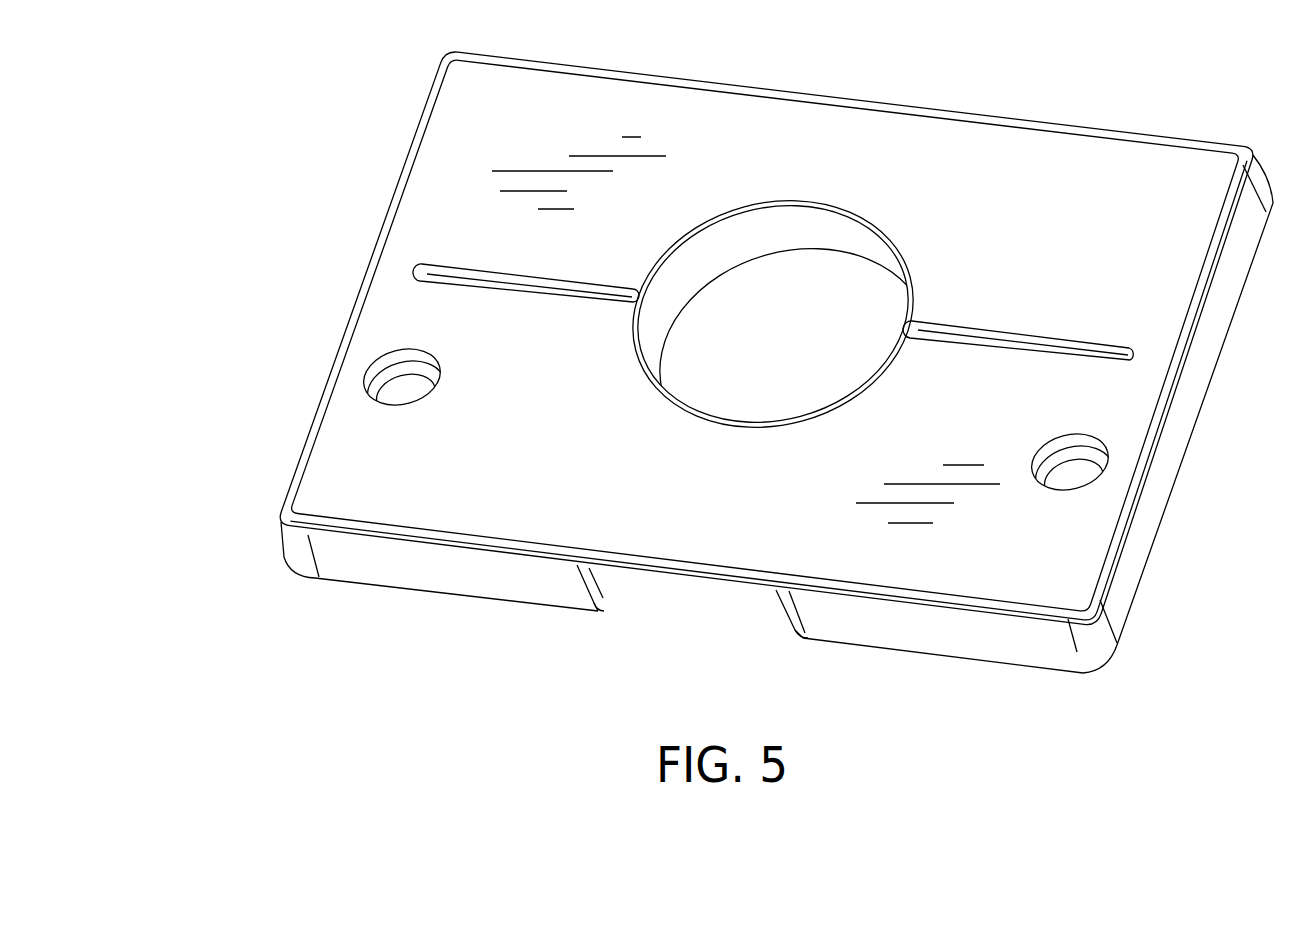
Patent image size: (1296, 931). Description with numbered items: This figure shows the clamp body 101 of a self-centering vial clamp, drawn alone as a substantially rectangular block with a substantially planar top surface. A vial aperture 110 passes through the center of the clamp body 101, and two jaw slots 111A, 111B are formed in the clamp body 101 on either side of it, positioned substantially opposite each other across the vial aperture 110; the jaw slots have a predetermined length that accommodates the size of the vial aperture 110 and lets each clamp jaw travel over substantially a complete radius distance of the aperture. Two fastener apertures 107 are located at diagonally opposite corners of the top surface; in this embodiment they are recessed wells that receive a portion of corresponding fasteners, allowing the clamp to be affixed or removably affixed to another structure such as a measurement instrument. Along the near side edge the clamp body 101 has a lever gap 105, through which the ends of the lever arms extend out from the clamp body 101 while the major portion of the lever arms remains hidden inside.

The clamp body 101 is at (258, 591).
The lever gap 105 is at (682, 600).
The fastener apertures 107 is at (384, 396).
The vial aperture 110 is at (822, 262).
The jaw slot 111A is at (419, 270).
The jaw slot 111B is at (1131, 356).